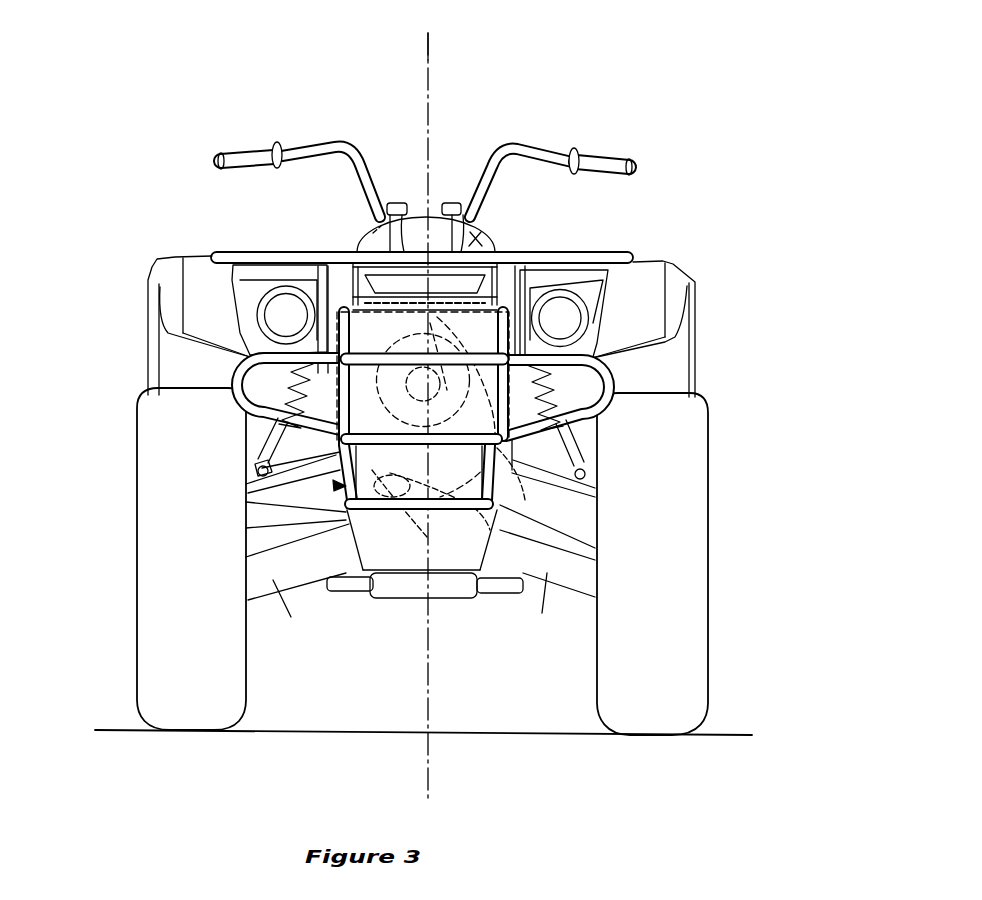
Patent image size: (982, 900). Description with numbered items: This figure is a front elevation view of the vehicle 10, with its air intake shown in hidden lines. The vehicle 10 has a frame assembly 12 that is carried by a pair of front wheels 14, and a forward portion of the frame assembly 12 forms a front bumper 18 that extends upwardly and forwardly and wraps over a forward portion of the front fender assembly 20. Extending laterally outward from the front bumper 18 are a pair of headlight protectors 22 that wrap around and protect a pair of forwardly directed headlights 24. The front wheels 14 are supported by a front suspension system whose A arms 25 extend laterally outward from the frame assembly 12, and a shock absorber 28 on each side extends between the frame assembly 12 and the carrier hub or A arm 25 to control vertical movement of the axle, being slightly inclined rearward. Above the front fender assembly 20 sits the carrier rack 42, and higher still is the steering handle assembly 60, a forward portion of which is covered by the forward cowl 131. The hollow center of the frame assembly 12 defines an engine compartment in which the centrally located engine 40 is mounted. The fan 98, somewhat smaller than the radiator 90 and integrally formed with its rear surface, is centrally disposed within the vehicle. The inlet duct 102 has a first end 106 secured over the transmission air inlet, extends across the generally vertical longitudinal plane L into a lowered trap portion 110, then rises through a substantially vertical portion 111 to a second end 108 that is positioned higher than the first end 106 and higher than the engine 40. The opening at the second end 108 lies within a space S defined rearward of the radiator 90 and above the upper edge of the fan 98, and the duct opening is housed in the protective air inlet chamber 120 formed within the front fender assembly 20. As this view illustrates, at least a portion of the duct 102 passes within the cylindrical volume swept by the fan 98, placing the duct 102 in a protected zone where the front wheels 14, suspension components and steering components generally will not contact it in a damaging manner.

The vehicle 10 is at (575, 116).
The frame assembly 12 is at (262, 467).
The front wheels 14 is at (140, 587).
The front bumper 18 is at (340, 456).
The front fender assembly 20 is at (187, 258).
The headlight protectors 22 is at (240, 372).
The headlights 24 is at (286, 315).
The A arms 25 is at (299, 500).
The shock absorber 28 is at (296, 396).
The engine 40 is at (488, 283).
The carrier rack 42 is at (424, 256).
The steering handle assembly 60 is at (504, 146).
The radiator 90 is at (423, 408).
The fan 98 is at (423, 411).
The inlet duct 102 is at (425, 554).
The first end 106 is at (399, 503).
The second end 108 is at (422, 335).
The trap portion 110 is at (480, 531).
The substantially vertical portion 111 is at (499, 474).
The air inlet chamber 120 is at (370, 283).
The forward cowl 131 is at (485, 250).
The space S is at (377, 337).
The longitudinal plane L is at (425, 685).